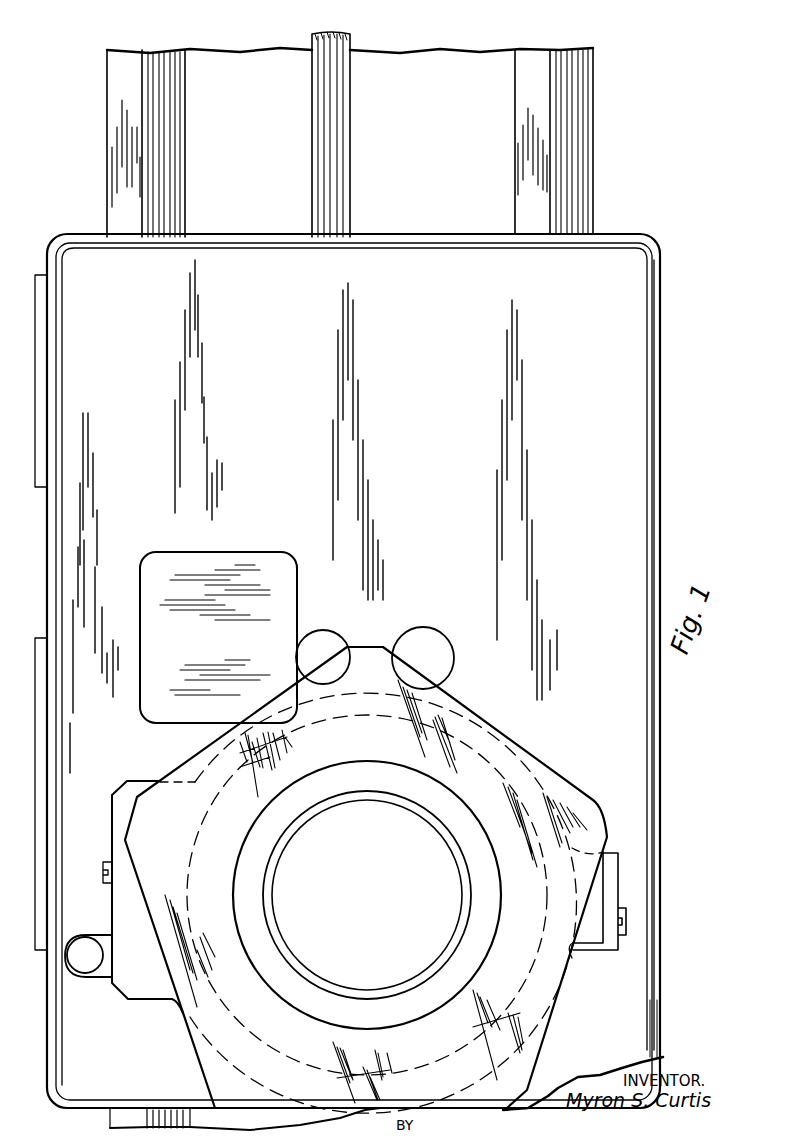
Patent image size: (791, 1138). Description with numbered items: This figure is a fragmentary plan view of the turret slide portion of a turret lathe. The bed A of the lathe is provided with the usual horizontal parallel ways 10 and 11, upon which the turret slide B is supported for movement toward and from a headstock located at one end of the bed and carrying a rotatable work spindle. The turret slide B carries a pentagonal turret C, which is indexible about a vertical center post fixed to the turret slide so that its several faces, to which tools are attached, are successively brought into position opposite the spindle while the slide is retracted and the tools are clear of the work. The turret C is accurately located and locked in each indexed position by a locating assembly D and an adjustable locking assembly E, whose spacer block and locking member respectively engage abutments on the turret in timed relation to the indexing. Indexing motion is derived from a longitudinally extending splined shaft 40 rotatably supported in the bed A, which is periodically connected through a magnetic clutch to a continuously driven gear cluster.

The horizontal parallel way 10 is at (583, 120).
The horizontal parallel way 11 is at (113, 145).
The longitudinally extending shaft 40 is at (322, 96).
The bed A is at (448, 62).
The turret slide B is at (415, 248).
The pentagonal turret C is at (560, 787).
The adjustable locking assembly E is at (125, 796).
The locating assembly D is at (597, 905).